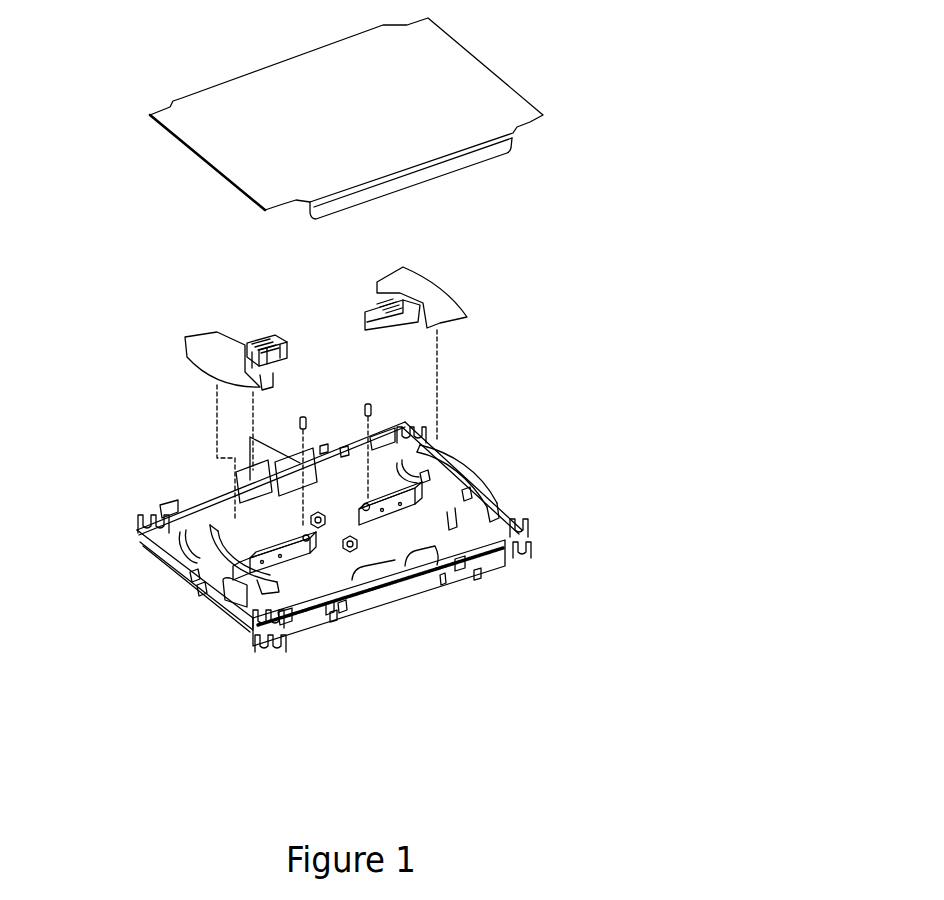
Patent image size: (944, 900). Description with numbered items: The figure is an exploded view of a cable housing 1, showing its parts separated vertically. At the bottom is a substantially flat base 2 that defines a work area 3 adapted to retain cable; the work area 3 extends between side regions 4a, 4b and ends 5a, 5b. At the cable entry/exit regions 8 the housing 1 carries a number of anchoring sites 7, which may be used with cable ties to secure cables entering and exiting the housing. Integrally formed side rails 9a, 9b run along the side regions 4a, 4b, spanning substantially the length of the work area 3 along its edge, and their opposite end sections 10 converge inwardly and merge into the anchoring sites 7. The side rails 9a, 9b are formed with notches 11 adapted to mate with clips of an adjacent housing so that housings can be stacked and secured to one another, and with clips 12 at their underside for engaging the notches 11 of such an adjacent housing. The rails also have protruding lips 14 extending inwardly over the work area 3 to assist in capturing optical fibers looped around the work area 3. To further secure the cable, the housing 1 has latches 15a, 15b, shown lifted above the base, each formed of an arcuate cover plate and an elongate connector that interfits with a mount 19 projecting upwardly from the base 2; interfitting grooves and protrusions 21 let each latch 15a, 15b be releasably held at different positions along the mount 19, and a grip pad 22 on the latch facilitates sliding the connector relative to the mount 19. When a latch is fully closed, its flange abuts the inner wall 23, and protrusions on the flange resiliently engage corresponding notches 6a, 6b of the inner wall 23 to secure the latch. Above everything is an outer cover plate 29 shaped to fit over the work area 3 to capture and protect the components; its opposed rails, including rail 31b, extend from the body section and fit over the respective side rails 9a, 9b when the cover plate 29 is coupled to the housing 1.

The cable housing 1 is at (517, 363).
The base 2 is at (187, 520).
The work area 3 is at (197, 553).
The side region 4a is at (192, 530).
The side region 4b is at (372, 592).
The end 5a is at (470, 462).
The end 5b is at (192, 573).
The notch 6a is at (420, 477).
The notch 6b is at (452, 525).
The anchoring site 7 is at (138, 517).
The cable entry/exit region 8 is at (437, 438).
The side rail 9a is at (348, 445).
The side rail 9b is at (340, 603).
The end section 10 is at (165, 503).
The notch 11 is at (323, 448).
The clip 12 is at (327, 620).
The protruding lip 14 is at (440, 582).
The latch 15a is at (447, 291).
The latch 15b is at (207, 347).
The mount 19 is at (300, 545).
The protrusion 21 is at (291, 547).
The grip pad 22 is at (378, 303).
The inner wall 23 is at (465, 492).
The outer cover plate 29 is at (458, 108).
The rail 31b is at (425, 178).